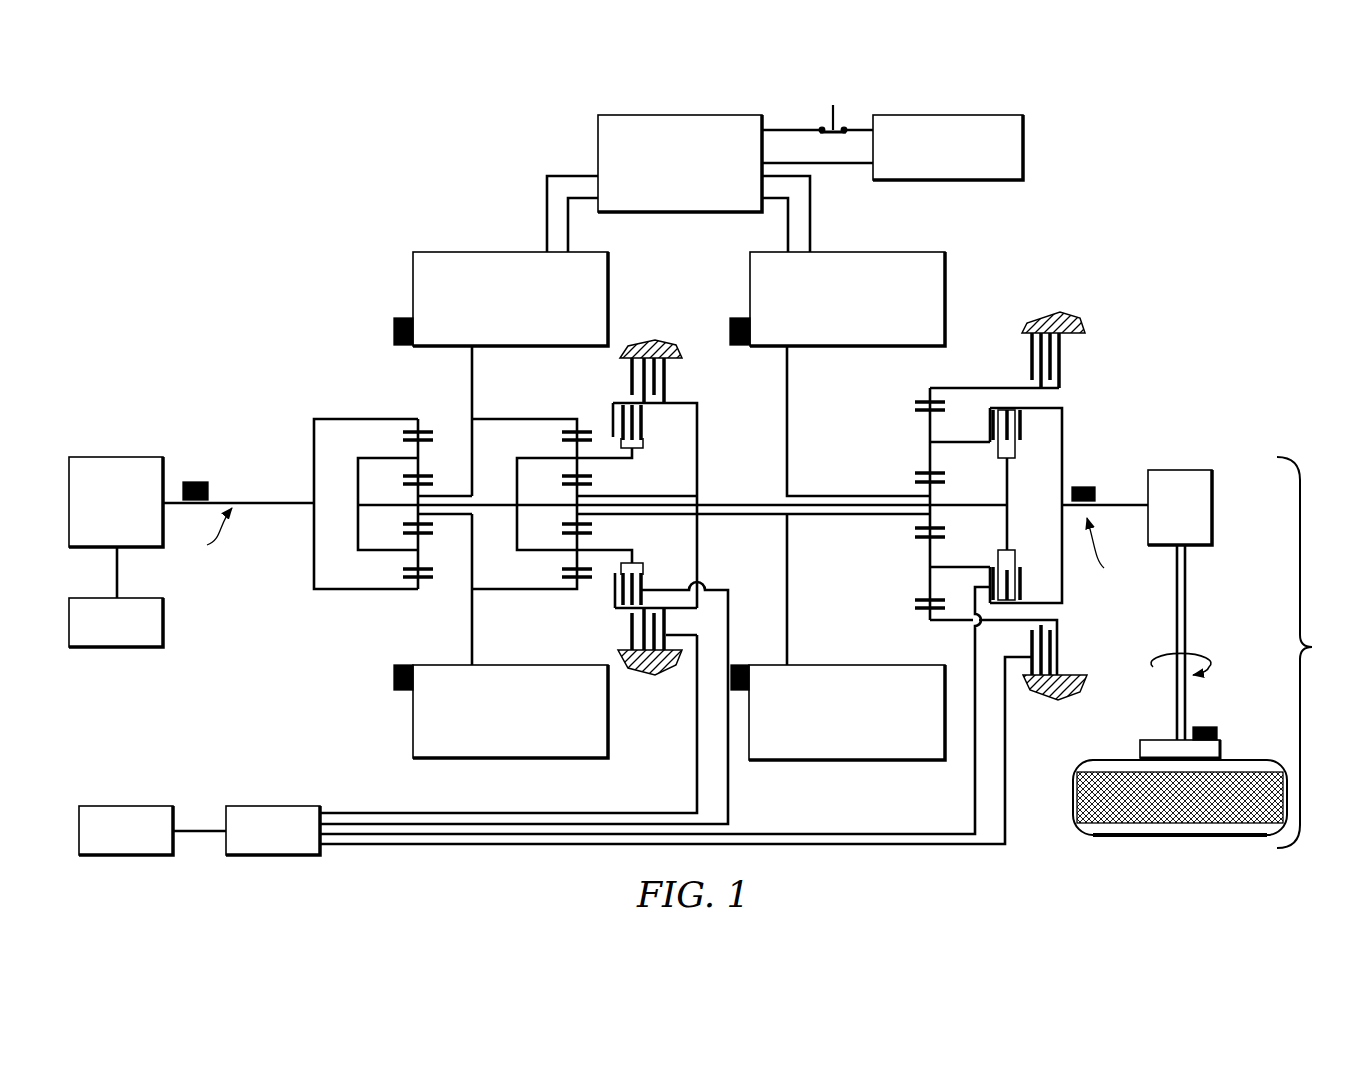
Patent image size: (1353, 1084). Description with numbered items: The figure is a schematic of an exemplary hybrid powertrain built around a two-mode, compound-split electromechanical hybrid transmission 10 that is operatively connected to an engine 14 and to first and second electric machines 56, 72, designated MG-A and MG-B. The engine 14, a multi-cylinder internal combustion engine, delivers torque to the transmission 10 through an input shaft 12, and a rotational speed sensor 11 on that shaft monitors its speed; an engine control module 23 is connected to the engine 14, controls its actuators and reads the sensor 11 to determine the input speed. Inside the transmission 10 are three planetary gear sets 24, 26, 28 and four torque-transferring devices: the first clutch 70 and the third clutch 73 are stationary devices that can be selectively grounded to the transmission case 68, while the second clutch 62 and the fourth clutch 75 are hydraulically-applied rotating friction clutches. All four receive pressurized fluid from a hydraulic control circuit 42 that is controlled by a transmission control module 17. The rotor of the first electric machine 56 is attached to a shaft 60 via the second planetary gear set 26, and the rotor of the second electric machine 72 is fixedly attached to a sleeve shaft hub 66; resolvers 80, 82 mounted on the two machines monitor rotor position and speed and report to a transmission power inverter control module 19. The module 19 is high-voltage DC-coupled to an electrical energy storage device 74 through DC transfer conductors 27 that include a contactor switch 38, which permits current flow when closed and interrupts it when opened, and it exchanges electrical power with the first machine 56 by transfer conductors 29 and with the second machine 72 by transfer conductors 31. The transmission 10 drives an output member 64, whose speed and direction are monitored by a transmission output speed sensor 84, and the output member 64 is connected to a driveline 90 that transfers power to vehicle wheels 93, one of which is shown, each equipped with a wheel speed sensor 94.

The electromechanical hybrid transmission 10 is at (374, 211).
The rotational speed sensor 11 is at (196, 482).
The input shaft 12 is at (273, 502).
The engine 14 is at (121, 457).
The transmission control module 17 is at (117, 806).
The transmission power inverter control module 19 is at (598, 126).
The engine control module 23 is at (162, 638).
The first planetary gear set 24 is at (411, 414).
The second planetary gear set 26 is at (573, 414).
The DC transfer conductors 27 is at (776, 130).
The third planetary gear set 28 is at (924, 386).
The transfer conductors 29 is at (547, 210).
The transfer conductors 31 is at (810, 210).
The contactor switch 38 is at (834, 106).
The hydraulic control circuit 42 is at (240, 806).
The first electric machine 56 is at (413, 285).
The shaft 60 is at (982, 503).
The clutch C2 62 is at (1026, 447).
The output member 64 is at (1118, 502).
The sleeve shaft hub 66 is at (825, 495).
The transmission case 68 is at (653, 345).
The clutch C1 70 is at (1018, 354).
The second electric machine 72 is at (945, 270).
The clutch C3 73 is at (670, 378).
The electrical energy storage device 74 is at (1023, 135).
The clutch C4 75 is at (659, 434).
The resolver 80 is at (394, 333).
The resolver 82 is at (738, 318).
The transmission output speed sensor 84 is at (1086, 487).
The driveline 90 is at (1312, 647).
The vehicle wheel 93 is at (1140, 752).
The wheel speed sensor 94 is at (1205, 727).